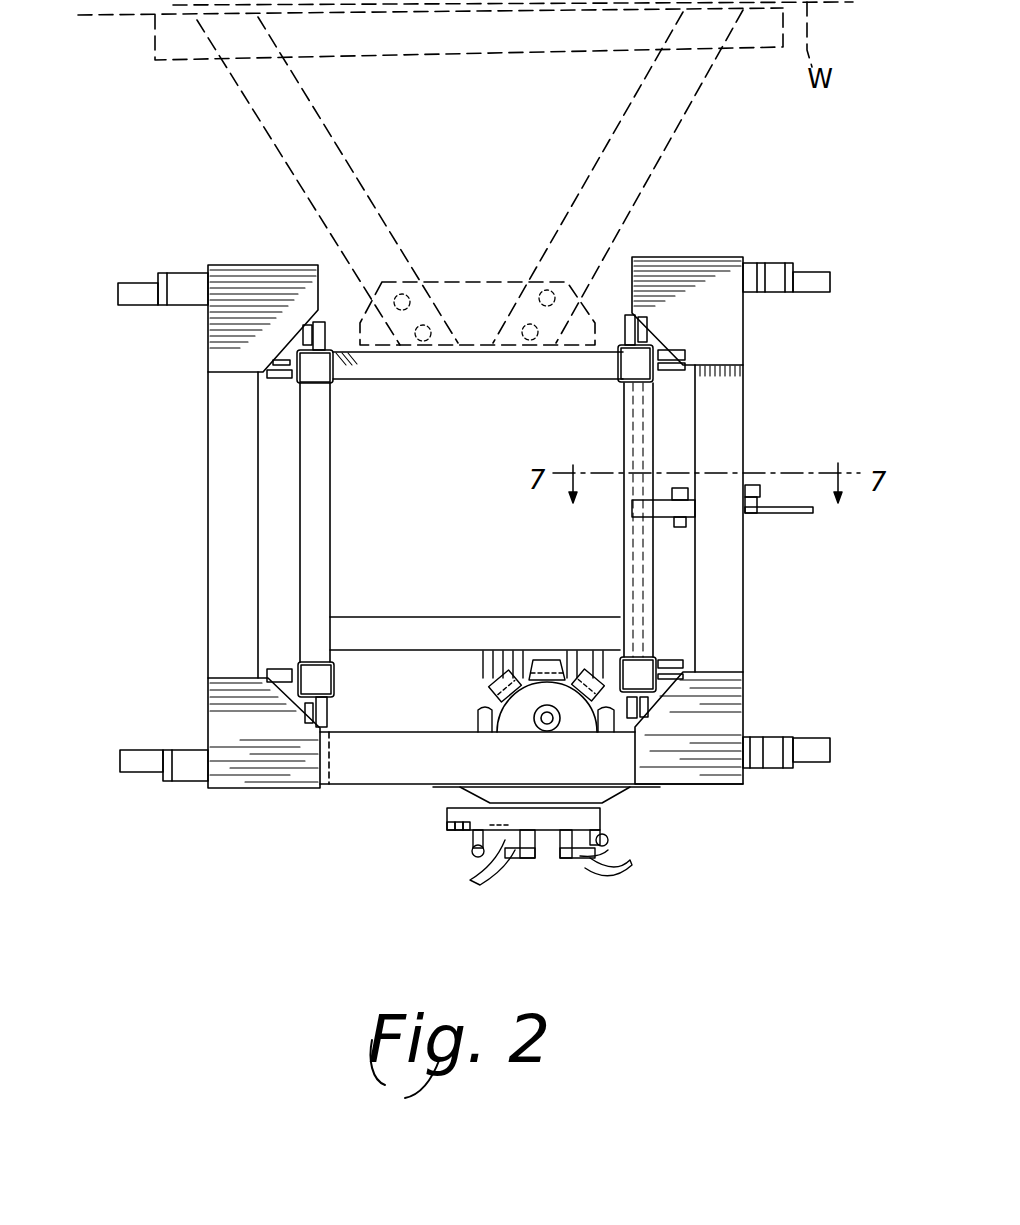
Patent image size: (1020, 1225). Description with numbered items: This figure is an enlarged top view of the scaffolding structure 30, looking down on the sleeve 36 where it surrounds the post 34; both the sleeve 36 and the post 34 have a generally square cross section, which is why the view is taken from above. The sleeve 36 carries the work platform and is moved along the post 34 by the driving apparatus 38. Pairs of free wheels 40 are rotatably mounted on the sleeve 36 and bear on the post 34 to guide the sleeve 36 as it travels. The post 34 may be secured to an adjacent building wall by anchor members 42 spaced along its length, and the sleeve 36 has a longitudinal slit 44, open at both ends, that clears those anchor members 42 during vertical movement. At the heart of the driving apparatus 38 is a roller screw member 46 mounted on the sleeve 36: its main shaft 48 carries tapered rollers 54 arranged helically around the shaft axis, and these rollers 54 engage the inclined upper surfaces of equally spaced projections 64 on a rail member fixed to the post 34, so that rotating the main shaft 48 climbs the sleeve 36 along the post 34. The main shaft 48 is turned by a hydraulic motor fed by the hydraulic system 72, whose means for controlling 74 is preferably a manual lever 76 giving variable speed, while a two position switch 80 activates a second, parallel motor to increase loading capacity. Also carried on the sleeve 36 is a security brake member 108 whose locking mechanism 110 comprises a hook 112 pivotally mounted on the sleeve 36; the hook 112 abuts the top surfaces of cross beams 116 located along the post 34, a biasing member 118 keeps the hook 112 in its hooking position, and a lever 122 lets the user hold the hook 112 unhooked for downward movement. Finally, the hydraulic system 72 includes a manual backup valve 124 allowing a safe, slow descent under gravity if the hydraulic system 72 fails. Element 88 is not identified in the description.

The scaffolding structure 30 is at (170, 470).
The post 34 is at (625, 467).
The sleeve 36 is at (737, 432).
The driving apparatus 38 is at (517, 707).
The free wheels 40 is at (327, 330).
The anchor members 42 is at (665, 147).
The longitudinal slit 44 is at (330, 280).
The roller screw member 46 is at (637, 782).
The main shaft 48 is at (520, 708).
The roller 54 is at (547, 660).
The projections 64 is at (508, 670).
The hydraulic system 72 is at (524, 862).
The means for controlling 74 is at (447, 815).
The manual lever 76 is at (448, 857).
The two position switch 80 is at (466, 868).
The hydraulic hose 88 is at (600, 862).
The security brake member 108 is at (760, 502).
The locking mechanism 110 is at (670, 520).
The hook 112 is at (665, 500).
The cross beams 116 is at (333, 533).
The biasing member 118 is at (757, 518).
The lever 122 is at (783, 515).
The manual backup valve 124 is at (607, 838).